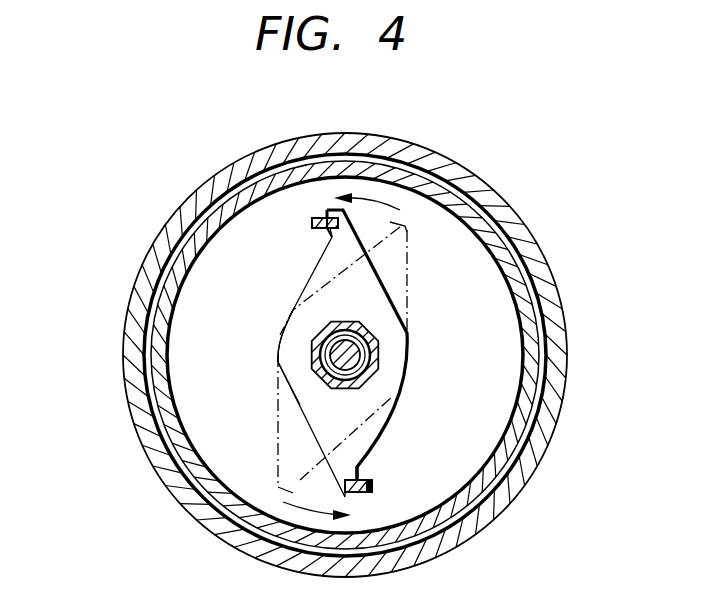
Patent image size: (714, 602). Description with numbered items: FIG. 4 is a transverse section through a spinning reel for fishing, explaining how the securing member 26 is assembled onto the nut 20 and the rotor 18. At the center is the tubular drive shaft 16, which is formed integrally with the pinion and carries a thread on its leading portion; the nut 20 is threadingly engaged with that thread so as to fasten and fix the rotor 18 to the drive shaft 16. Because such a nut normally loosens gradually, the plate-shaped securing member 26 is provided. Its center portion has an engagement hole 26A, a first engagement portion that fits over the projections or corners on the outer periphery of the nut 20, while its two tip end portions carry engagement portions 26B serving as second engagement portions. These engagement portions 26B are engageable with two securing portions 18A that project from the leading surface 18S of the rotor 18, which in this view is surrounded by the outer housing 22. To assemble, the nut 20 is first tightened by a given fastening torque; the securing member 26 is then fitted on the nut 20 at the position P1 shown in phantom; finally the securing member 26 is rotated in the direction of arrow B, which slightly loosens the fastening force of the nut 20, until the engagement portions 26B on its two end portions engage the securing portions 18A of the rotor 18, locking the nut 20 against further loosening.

The housing 22 is at (500, 205).
The rotor 18 is at (477, 186).
The leading surface 18S is at (193, 332).
The securing portions 18A is at (312, 223).
The securing member 26 is at (370, 298).
The engagement hole 26A is at (330, 382).
The engagement portions 26B is at (327, 241).
The drive shaft 16 is at (366, 340).
The nut 20 is at (370, 366).
The position P1 is at (409, 271).
The arrow B is at (374, 198).